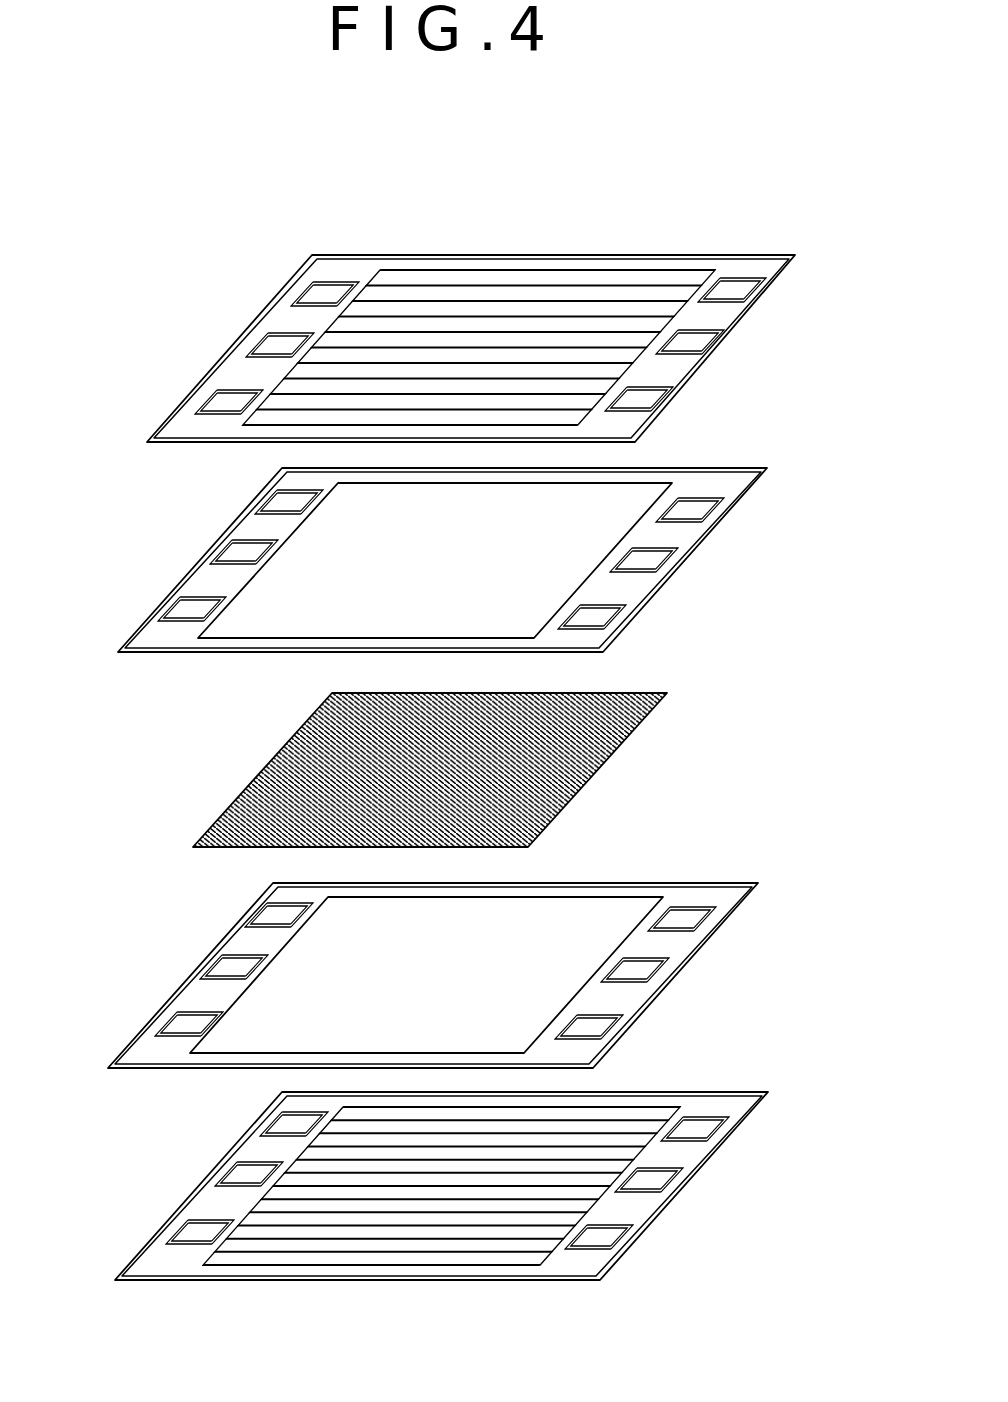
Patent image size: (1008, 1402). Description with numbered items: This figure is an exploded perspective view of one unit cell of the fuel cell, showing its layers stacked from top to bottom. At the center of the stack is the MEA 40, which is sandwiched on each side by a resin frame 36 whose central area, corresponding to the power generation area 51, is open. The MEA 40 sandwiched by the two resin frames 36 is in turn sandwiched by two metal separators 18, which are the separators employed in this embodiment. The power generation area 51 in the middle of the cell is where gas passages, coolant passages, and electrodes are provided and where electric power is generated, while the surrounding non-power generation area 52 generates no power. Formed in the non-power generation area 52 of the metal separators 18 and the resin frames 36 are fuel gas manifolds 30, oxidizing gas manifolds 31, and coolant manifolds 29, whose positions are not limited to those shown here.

The metal separator 18 is at (740, 327).
The coolant manifold 29 is at (270, 345).
The fuel gas manifold 30 is at (317, 295).
The oxidizing gas manifold 31 is at (227, 405).
The resin frame 36 is at (706, 543).
The MEA 40 is at (607, 763).
The power generation area 51 is at (535, 290).
The non-power generation area 52 is at (757, 268).